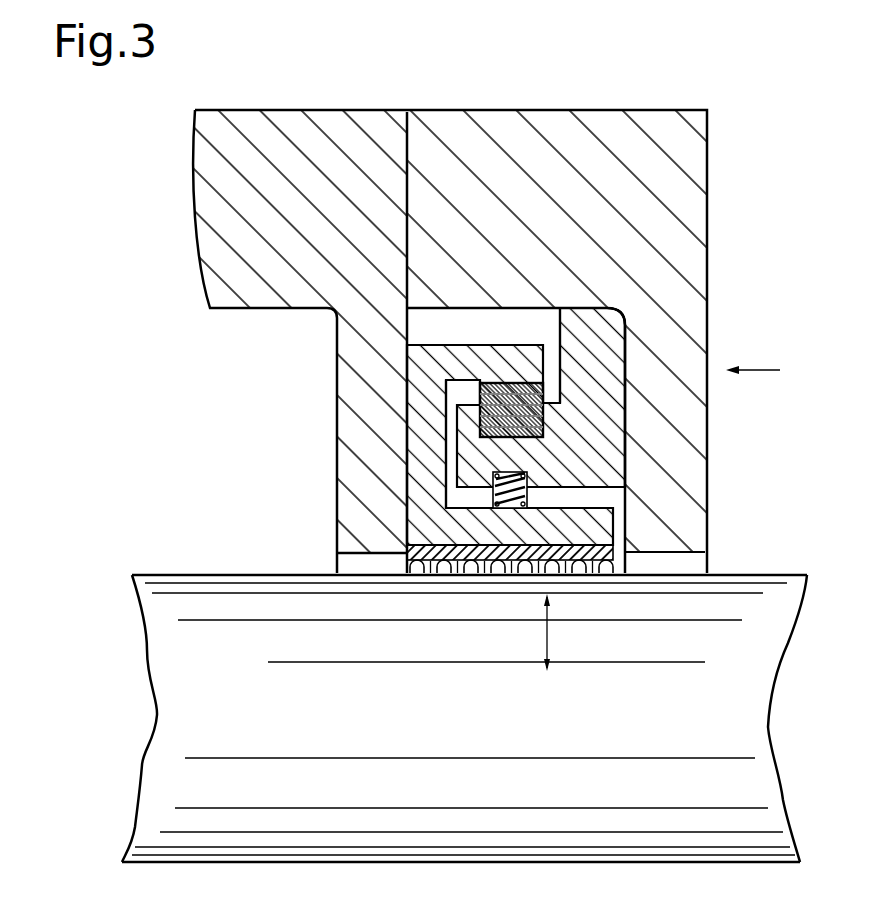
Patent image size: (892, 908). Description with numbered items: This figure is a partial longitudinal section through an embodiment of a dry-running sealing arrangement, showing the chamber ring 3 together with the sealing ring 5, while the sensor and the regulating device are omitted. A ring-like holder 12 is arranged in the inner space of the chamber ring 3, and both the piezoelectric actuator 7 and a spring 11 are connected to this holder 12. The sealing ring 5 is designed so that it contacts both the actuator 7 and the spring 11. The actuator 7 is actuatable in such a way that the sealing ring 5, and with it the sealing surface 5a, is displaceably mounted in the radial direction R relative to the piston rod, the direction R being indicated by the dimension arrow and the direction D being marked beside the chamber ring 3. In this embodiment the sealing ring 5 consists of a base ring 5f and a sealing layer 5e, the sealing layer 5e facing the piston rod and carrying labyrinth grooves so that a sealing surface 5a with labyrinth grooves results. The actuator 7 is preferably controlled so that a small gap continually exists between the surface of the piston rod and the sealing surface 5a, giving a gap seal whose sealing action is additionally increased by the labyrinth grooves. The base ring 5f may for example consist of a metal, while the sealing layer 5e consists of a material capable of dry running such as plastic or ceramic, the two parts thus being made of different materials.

The chamber ring 3 is at (332, 122).
The sealing ring 5 is at (537, 512).
The sealing surface 5a is at (498, 563).
The sealing layer 5e is at (588, 573).
The base ring 5f is at (418, 455).
The piezoelectric actuator 7 is at (480, 395).
The spring 11 is at (530, 493).
The ring-like holder 12 is at (612, 415).
The direction arrow D is at (757, 356).
The radial direction R is at (555, 632).